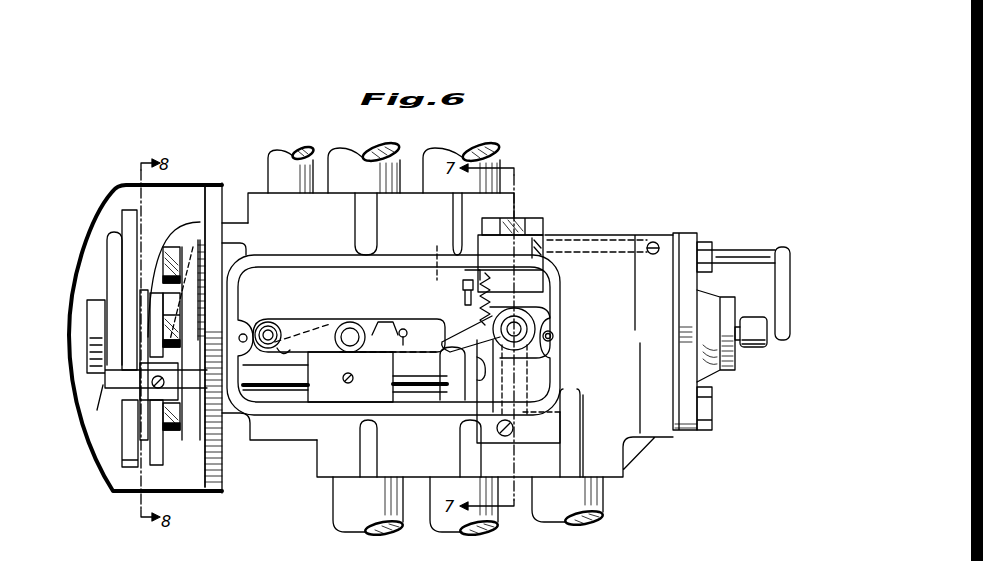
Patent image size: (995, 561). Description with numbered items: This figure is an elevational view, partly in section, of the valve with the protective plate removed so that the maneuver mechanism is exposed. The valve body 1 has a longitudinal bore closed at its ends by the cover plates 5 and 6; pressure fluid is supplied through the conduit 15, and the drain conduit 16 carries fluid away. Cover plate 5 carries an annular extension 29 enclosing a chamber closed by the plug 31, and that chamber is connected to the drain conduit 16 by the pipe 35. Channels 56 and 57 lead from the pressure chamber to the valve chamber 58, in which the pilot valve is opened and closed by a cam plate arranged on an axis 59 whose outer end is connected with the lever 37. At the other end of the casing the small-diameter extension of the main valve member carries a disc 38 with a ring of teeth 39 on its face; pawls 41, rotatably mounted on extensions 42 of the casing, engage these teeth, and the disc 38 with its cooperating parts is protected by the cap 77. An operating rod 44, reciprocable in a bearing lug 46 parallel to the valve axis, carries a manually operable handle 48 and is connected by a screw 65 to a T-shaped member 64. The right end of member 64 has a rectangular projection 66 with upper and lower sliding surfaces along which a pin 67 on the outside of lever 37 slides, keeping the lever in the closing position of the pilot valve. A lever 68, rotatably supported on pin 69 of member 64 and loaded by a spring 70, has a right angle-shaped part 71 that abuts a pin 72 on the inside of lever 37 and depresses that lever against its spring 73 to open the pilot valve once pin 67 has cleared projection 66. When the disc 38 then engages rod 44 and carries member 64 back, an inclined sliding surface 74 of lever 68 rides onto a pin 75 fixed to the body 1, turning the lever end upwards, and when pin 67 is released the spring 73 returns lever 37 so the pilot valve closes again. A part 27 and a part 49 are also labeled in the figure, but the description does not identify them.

The valve body 1 is at (618, 233).
The cover plate 5 is at (708, 395).
The cover plate 6 is at (197, 432).
The conduit 15 is at (347, 160).
The drain conduit 16 is at (605, 500).
The adjusting rod 27 is at (725, 250).
The annular extension 29 is at (710, 297).
The plug 31 is at (732, 372).
The pipe 35 is at (549, 386).
The lever 37 is at (519, 351).
The disc 38 is at (127, 215).
The ring of teeth 39 is at (146, 397).
The pawls 41 is at (147, 283).
The extensions 42 is at (195, 222).
The operating rod 44 is at (103, 385).
The bearing lug 46 is at (480, 375).
The handle 48 is at (355, 323).
The hub block 49 is at (126, 460).
The channel 56 is at (656, 242).
The channel 57 is at (593, 252).
The valve chamber 58 is at (550, 235).
The axis 59 is at (520, 325).
The T-shaped member 64 is at (308, 365).
The screw 65 is at (348, 384).
The projection 66 is at (440, 270).
The pin 67 is at (467, 342).
The lever 68 is at (422, 318).
The pin 69 is at (267, 322).
The spring 70 is at (333, 315).
The right angle-shaped part 71 is at (464, 292).
The pin 72 is at (487, 312).
The spring 73 is at (488, 305).
The inclined sliding surface 74 is at (402, 357).
The pin 75 is at (405, 340).
The cap 77 is at (82, 423).